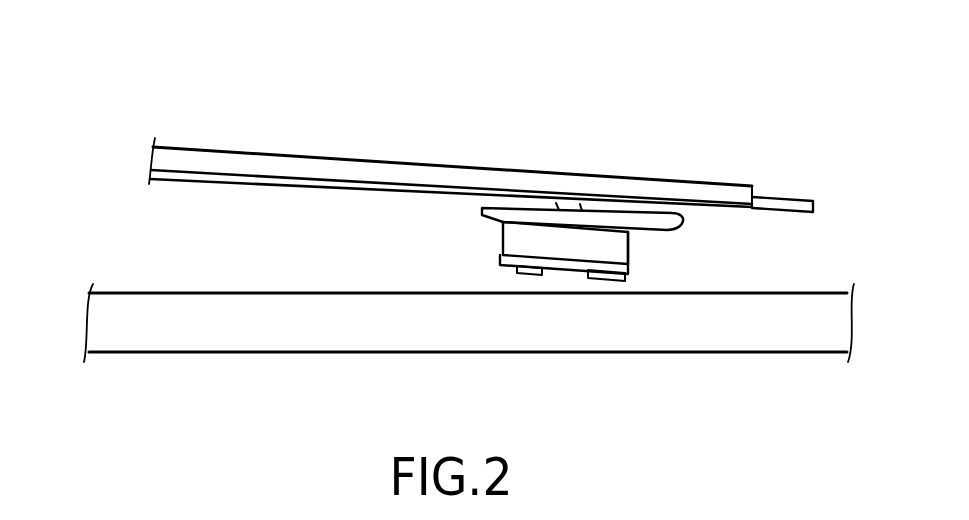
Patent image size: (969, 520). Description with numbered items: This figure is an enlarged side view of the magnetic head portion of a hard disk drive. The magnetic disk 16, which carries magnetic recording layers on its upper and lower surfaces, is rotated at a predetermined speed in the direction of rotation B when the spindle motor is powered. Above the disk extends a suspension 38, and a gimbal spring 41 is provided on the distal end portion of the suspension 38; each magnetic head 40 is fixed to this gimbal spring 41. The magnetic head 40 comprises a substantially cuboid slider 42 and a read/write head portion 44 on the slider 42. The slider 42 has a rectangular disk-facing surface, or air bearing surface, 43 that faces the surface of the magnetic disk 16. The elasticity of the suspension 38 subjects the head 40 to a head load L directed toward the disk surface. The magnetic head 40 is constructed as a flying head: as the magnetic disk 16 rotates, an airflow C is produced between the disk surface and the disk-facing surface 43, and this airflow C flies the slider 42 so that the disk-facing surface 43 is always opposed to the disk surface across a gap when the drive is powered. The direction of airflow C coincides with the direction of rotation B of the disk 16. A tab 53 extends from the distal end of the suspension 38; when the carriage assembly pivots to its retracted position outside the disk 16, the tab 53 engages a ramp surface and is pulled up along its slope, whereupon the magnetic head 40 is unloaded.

The magnetic disk 16 is at (276, 352).
The suspension 38 is at (318, 168).
The magnetic head 40 is at (486, 245).
The gimbal spring 41 is at (487, 207).
The slider 42 is at (598, 243).
The disk-facing surface (air bearing surface) 43 is at (567, 290).
The read/write head portion 44 is at (628, 248).
The tab 53 is at (782, 202).
The head load L is at (570, 146).
The airflow C is at (430, 281).
The direction of rotation B is at (468, 377).